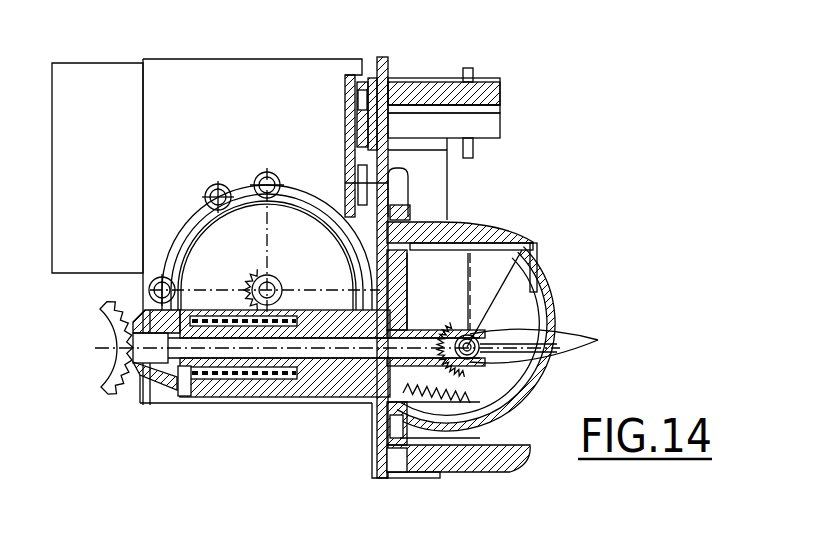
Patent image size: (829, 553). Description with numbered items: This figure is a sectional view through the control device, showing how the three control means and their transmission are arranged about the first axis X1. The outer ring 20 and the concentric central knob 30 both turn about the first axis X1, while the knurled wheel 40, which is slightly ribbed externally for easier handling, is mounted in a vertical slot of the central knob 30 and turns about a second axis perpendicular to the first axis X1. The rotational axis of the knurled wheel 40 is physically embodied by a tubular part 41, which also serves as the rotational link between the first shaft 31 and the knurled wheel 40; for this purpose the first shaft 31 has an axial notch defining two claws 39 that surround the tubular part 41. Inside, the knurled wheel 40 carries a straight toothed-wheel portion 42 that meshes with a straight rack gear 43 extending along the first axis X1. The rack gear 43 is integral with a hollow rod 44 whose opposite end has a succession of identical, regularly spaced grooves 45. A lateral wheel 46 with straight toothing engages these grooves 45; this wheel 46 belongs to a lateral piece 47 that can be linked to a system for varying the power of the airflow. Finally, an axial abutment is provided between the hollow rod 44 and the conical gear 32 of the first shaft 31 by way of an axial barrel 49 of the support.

The first axis X1 is at (107, 350).
The outer ring 20 is at (493, 232).
The central knob 30 is at (536, 246).
The first shaft 31 is at (360, 372).
The conical gear 32 is at (150, 403).
The claws 39 is at (545, 343).
The knurled wheel 40 is at (549, 318).
The tubular part 41 is at (458, 333).
The straight toothed-wheel portion 42 is at (465, 376).
The straight rack gear 43 is at (445, 405).
The hollow rod 44 is at (325, 375).
The grooves 45 is at (237, 375).
The lateral wheel 46 is at (253, 268).
The lateral piece 47 is at (236, 187).
The axial barrel 49 is at (197, 388).